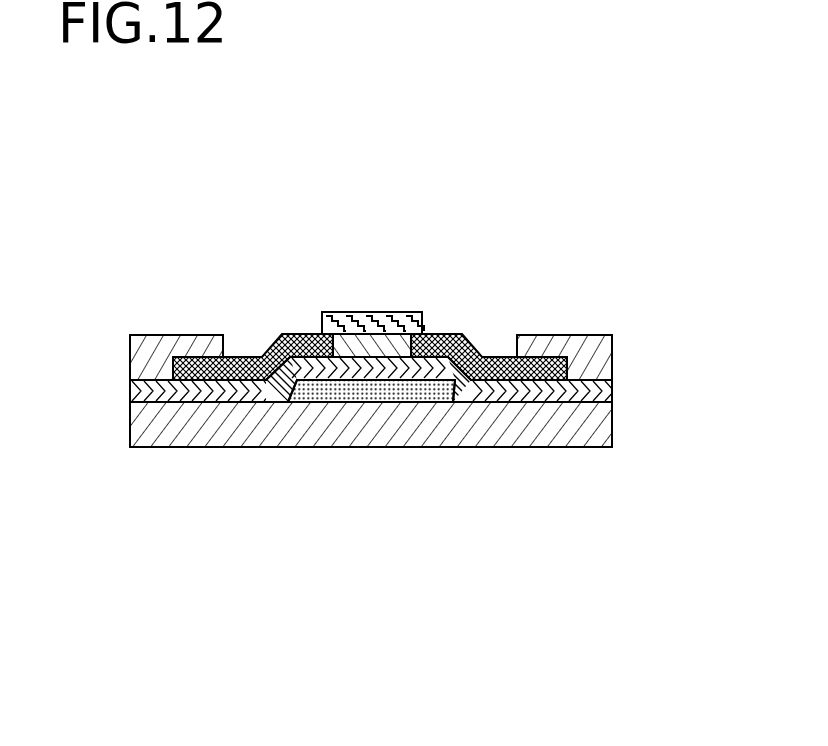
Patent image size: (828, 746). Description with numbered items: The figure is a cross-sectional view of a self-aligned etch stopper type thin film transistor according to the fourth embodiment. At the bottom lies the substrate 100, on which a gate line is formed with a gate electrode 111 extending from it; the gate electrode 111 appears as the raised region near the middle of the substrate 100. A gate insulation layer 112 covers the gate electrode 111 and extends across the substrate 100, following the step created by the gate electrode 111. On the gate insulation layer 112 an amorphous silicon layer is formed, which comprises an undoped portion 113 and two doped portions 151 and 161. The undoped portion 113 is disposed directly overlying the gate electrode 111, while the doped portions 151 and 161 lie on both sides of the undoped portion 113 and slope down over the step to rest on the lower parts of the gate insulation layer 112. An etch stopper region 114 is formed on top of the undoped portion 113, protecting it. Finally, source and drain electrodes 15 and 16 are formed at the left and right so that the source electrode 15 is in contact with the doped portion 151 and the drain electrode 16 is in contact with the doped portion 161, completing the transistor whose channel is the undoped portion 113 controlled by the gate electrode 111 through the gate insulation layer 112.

The substrate 100 is at (605, 425).
The gate electrode 111 is at (388, 393).
The gate insulation layer 112 is at (140, 395).
The undoped portion 113 is at (360, 347).
The etch stopper region 114 is at (373, 313).
The source electrode 15 is at (169, 348).
The doped portion 151 is at (293, 337).
The drain electrode 16 is at (583, 350).
The doped portion 161 is at (488, 356).